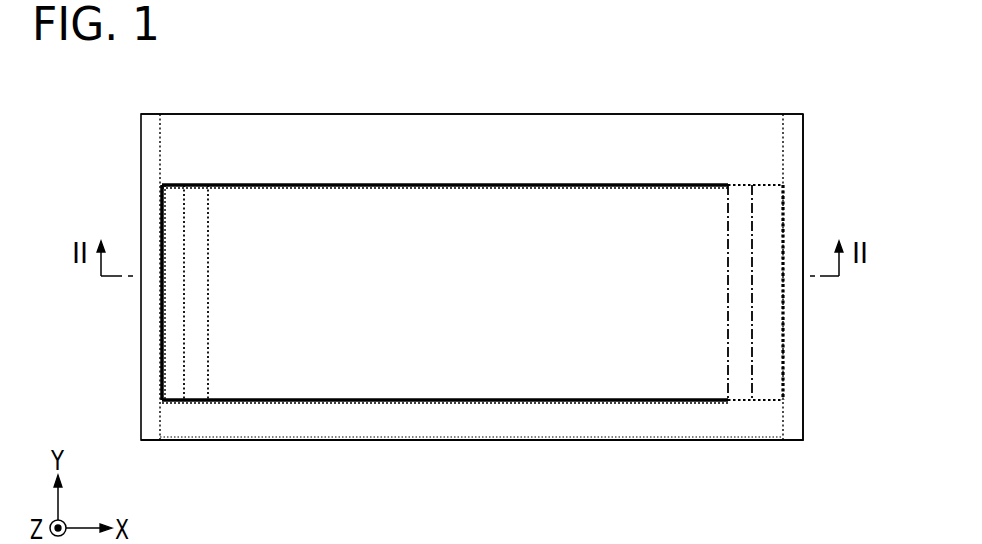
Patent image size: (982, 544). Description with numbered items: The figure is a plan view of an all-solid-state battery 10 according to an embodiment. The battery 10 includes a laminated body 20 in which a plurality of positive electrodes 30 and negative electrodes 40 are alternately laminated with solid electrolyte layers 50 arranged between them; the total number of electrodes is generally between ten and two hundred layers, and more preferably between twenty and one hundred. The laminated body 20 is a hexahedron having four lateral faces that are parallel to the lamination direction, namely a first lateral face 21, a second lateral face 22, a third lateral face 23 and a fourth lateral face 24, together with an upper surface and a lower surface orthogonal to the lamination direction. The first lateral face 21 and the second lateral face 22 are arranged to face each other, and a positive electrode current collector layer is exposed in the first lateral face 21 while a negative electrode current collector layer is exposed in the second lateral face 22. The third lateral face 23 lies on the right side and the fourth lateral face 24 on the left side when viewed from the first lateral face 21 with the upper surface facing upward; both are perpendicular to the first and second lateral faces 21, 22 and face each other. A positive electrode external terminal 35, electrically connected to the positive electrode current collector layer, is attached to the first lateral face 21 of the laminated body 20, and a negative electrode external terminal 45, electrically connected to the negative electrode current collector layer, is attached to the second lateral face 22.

The all-solid-state battery 10 is at (753, 107).
The laminated body 20 is at (546, 441).
The first lateral face 21 is at (160, 400).
The second lateral face 22 is at (783, 420).
The third lateral face 23 is at (290, 441).
The fourth lateral face 24 is at (288, 114).
The positive electrode 30 is at (625, 345).
The positive electrode external terminal 35 is at (160, 318).
The negative electrode 40 is at (238, 345).
The negative electrode external terminal 45 is at (793, 170).
The solid electrolyte layer 50 is at (367, 431).